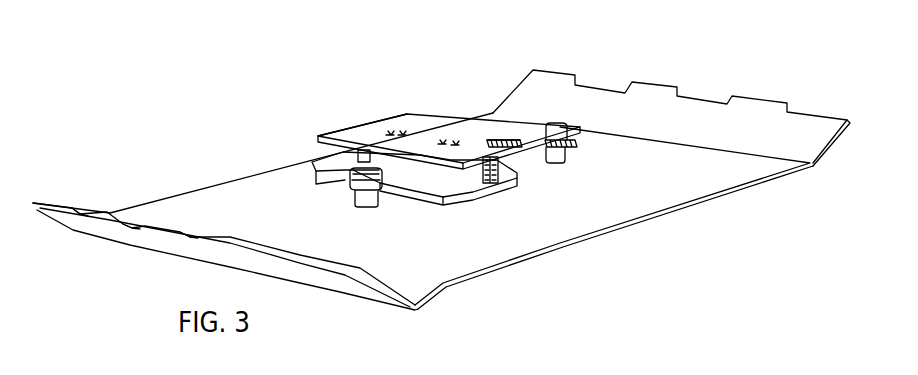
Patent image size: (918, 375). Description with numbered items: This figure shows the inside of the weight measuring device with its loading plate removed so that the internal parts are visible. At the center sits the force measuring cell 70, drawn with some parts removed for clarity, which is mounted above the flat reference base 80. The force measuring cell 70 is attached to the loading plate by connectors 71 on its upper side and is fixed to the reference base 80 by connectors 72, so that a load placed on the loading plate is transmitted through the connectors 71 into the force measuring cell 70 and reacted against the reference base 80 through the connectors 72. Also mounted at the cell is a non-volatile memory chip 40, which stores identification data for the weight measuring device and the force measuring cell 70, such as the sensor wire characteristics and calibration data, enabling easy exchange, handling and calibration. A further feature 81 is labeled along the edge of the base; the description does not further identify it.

The non-volatile memory chip 40 is at (502, 140).
The force measuring cell 70 is at (406, 109).
The connectors 71 is at (362, 125).
The connectors 72 is at (562, 152).
The reference base 80 is at (552, 252).
The notched flange of base plate 81 is at (742, 112).